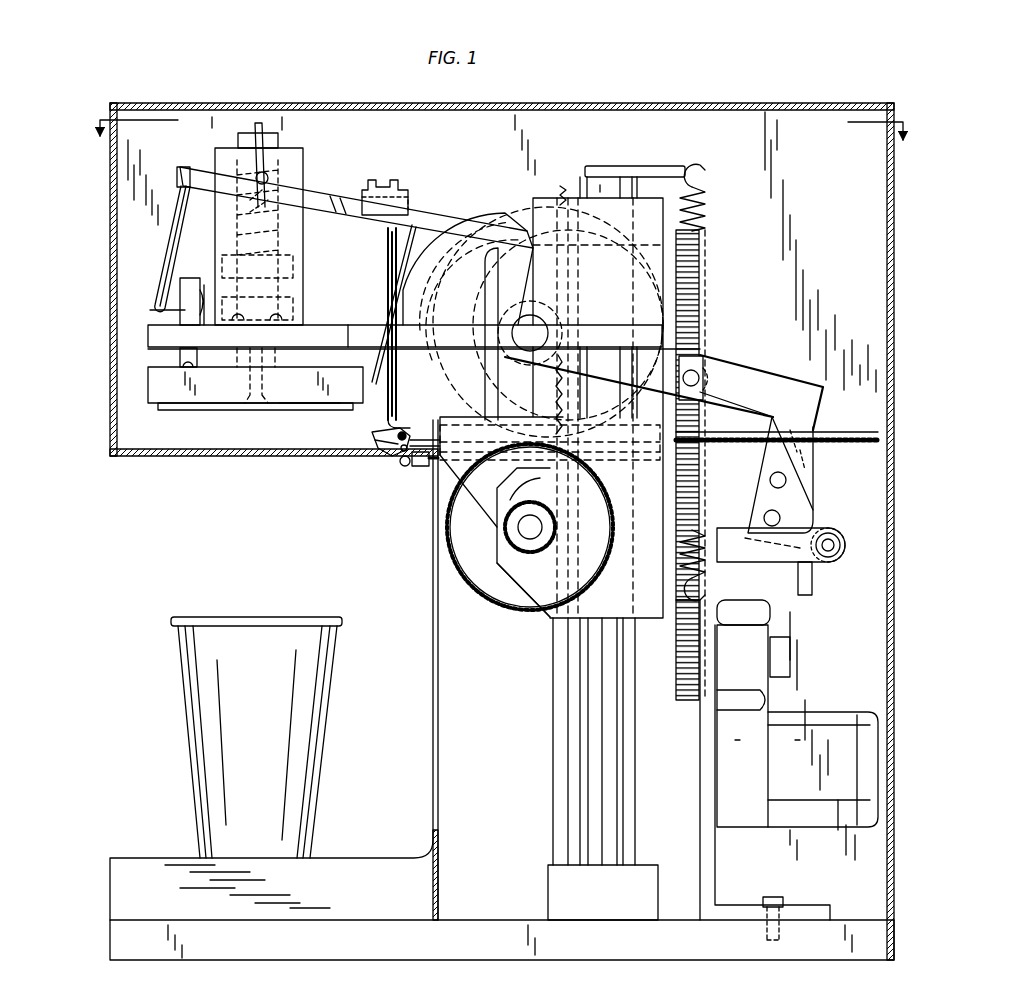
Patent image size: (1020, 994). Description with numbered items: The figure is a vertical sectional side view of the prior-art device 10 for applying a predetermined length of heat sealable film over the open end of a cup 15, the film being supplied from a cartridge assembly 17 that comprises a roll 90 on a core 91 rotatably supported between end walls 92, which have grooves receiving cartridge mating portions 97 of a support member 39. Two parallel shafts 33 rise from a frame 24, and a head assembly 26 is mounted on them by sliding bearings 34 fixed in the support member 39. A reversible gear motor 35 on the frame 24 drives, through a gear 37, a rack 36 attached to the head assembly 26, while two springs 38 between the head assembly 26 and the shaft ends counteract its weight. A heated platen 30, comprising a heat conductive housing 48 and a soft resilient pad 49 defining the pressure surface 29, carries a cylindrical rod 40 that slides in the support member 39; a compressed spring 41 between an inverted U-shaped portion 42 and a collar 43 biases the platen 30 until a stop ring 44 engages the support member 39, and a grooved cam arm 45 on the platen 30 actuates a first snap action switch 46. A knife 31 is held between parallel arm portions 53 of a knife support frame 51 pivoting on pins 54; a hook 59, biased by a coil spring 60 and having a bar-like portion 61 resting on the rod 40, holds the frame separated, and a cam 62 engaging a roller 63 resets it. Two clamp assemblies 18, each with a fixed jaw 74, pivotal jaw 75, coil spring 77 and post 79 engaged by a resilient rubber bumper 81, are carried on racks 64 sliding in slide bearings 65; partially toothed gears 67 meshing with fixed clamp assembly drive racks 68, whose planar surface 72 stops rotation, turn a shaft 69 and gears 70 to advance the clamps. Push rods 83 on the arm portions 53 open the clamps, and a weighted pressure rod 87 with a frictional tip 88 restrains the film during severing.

The device 10 is at (692, 76).
The cup 15 is at (258, 716).
The cartridge assembly 17 is at (508, 200).
The clamp assemblies 18 is at (388, 447).
The frame 24 is at (495, 948).
The head assembly 26 is at (354, 325).
The pressure surface 29 is at (212, 410).
The heated platen 30 is at (303, 410).
The knife 31 is at (375, 365).
The shafts 33 is at (585, 172).
The sliding bearings 34 is at (624, 218).
The reversible gear motor 35 is at (818, 779).
The rack 36 is at (700, 276).
The gear 37 is at (690, 692).
The springs 38 is at (706, 200).
The support member 39 is at (158, 340).
The cylindrical rod 40 is at (278, 138).
The compressed spring 41 is at (295, 190).
The inverted U-shaped portion 42 is at (300, 172).
The collar 43 is at (293, 268).
The stop ring 44 is at (293, 303).
The cam arm 45 is at (150, 312).
The first snap action switch 46 is at (205, 278).
The housing 48 is at (168, 389).
The pad 49 is at (188, 410).
The knife support frame 51 is at (426, 192).
The arm portions 53 is at (205, 165).
The pins 54 is at (700, 380).
The hook 59 is at (250, 205).
The coil spring 60 is at (268, 175).
The bar-like portion 61 is at (255, 128).
The cam 62 is at (800, 505).
The roller 63 is at (830, 562).
The racks 64 is at (845, 432).
The slide bearings 65 is at (462, 428).
The partially toothed gears 67 is at (528, 475).
The clamp assembly drive racks 68 is at (560, 188).
The shaft 69 is at (532, 540).
The gears 70 is at (505, 595).
The planar surface 72 is at (552, 716).
The fixed jaw 74 is at (380, 432).
The pivotal jaw 75 is at (385, 440).
The coil spring 77 is at (404, 452).
The post 79 is at (403, 468).
The resilient rubber bumper 81 is at (420, 467).
The push rods 83 is at (175, 215).
The weighted pressure rod 87 is at (388, 247).
The tip 88 is at (393, 410).
The roll 90 is at (628, 285).
The core 91 is at (535, 362).
The end walls 92 is at (470, 265).
The cartridge mating portions 97 is at (485, 295).